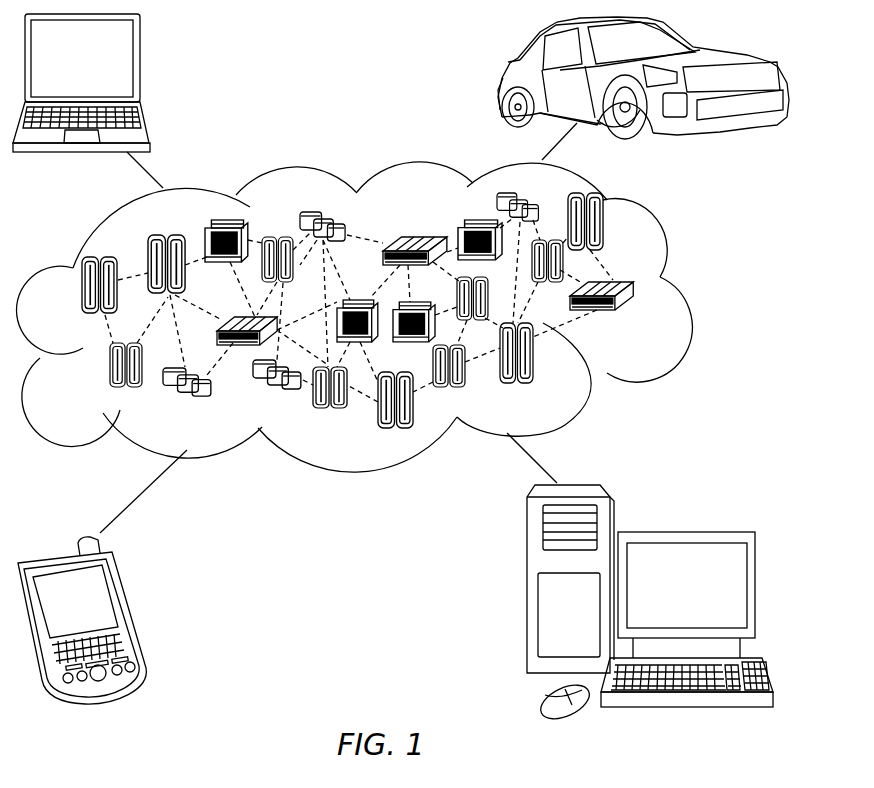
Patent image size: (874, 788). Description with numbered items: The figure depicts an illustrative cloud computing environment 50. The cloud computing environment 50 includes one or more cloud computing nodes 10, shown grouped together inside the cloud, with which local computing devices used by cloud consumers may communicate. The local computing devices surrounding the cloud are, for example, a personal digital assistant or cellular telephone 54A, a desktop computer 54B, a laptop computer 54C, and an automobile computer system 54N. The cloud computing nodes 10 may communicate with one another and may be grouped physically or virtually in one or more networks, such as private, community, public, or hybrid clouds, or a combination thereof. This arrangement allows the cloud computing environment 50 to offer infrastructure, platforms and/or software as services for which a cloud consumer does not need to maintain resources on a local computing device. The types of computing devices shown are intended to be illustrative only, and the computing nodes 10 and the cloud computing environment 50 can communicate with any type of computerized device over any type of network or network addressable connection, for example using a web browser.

The cloud computing node 10 is at (635, 318).
The cloud computing environment 50 is at (683, 293).
The personal digital assistant or cellular telephone 54A is at (133, 609).
The desktop computer 54B is at (683, 532).
The laptop computer 54C is at (142, 66).
The automobile computer system 54N is at (502, 80).